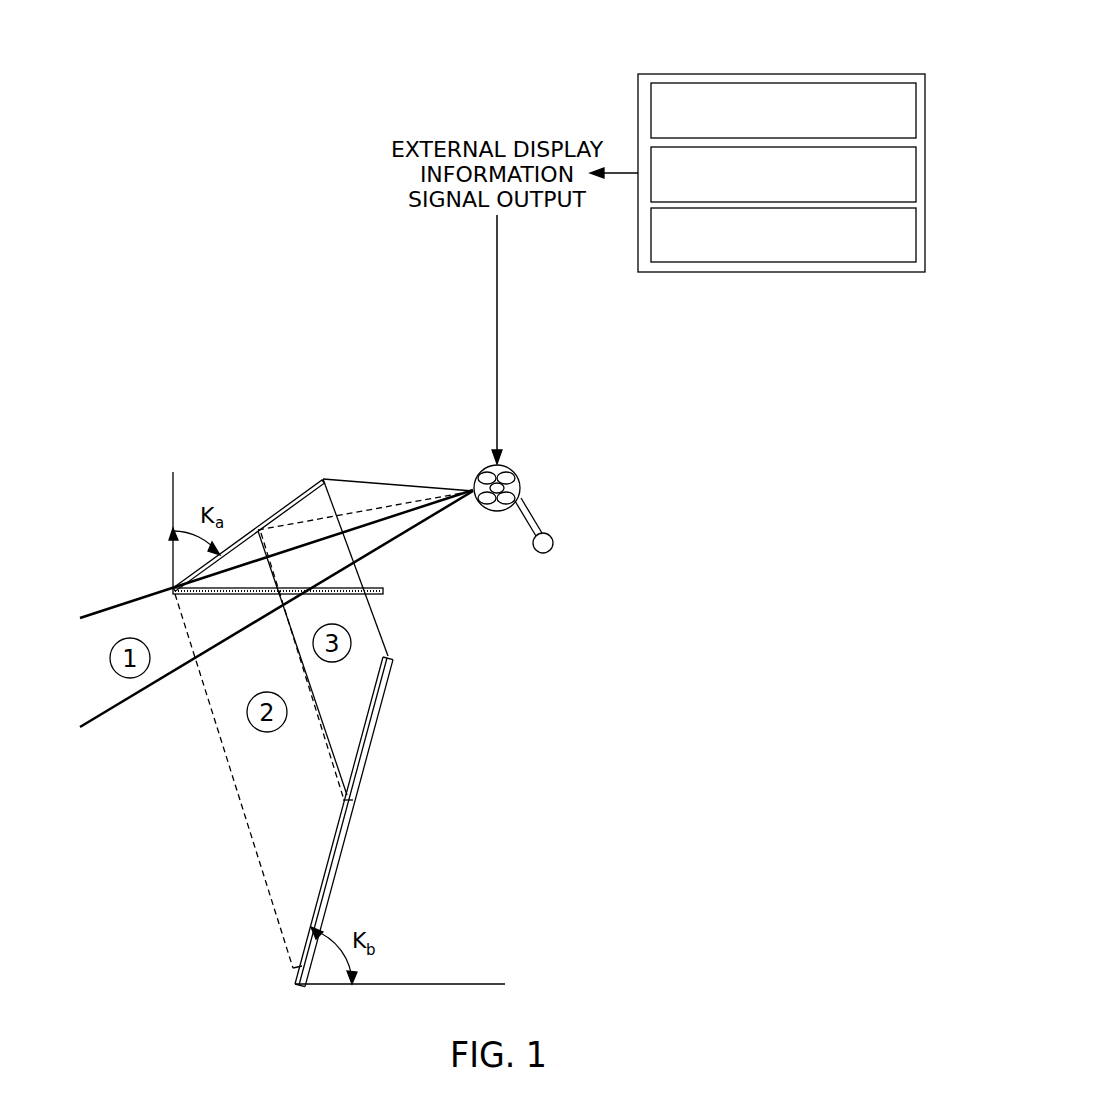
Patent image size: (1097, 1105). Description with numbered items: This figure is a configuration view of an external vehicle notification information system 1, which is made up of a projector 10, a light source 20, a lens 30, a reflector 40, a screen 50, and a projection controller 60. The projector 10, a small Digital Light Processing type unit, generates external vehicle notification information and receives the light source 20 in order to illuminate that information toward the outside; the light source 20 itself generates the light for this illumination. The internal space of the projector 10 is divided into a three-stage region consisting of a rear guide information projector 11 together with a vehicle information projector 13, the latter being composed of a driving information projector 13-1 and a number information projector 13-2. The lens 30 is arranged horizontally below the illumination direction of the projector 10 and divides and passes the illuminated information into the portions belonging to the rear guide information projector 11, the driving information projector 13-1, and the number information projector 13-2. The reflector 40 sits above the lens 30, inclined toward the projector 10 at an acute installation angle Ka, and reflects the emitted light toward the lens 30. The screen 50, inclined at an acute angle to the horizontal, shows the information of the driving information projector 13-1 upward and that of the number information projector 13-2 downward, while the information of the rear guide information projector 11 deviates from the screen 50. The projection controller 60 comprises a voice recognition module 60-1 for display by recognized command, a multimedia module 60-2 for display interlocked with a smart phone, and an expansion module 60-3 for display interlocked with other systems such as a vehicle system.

The external vehicle notification information system 1 is at (188, 396).
The projector 10 is at (609, 474).
The rear guide information projector 11 is at (520, 498).
The vehicle information projector 13 is at (578, 454).
The driving information projector 13-1 is at (506, 489).
The number information projector 13-2 is at (512, 468).
The light source 20 is at (547, 545).
The lens 30 is at (385, 590).
The reflector 40 is at (272, 518).
The screen 50 is at (378, 722).
The projection controller 60 is at (815, 74).
The voice recognition module 60-1 is at (753, 83).
The multimedia module 60-2 is at (651, 157).
The expansion module 60-3 is at (820, 262).